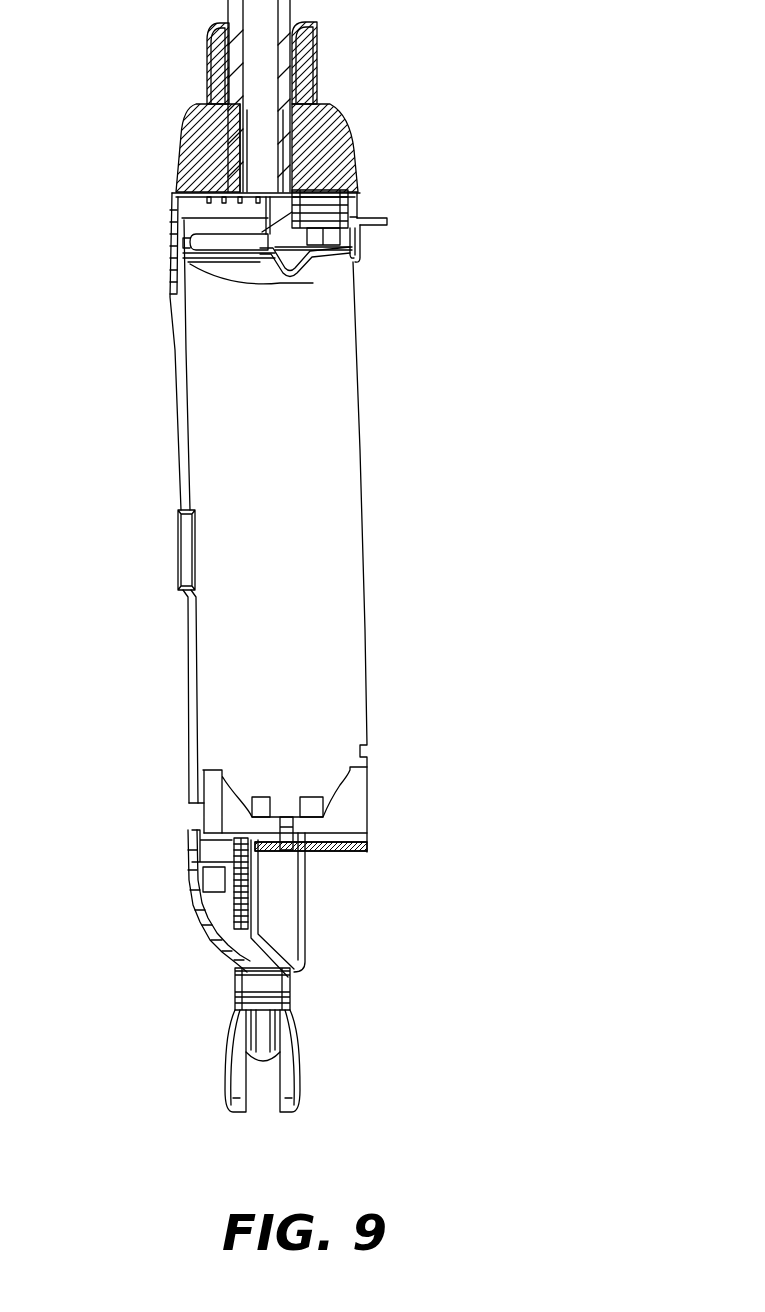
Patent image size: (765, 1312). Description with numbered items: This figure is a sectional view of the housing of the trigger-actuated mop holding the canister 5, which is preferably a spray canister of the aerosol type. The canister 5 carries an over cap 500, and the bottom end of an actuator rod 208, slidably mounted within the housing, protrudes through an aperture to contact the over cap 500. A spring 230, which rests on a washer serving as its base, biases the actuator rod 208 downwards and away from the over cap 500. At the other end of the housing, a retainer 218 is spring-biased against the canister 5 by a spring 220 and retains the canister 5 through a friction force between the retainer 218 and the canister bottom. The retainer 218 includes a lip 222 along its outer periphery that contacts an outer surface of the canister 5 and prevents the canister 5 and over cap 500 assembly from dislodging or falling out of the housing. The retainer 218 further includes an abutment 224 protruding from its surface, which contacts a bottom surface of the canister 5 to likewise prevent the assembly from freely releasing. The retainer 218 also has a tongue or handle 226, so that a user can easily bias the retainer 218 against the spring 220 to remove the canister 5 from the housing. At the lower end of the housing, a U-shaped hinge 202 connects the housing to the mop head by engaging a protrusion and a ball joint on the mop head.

The canister 5 is at (352, 594).
The spring 220 is at (348, 201).
The tongue or handle 226 is at (386, 221).
The retainer 218 is at (363, 235).
The lip 222 is at (358, 256).
The abutment 224 is at (313, 283).
The over cap 500 is at (370, 803).
The spring 230 is at (250, 873).
The actuator rod 208 is at (235, 915).
The U-shaped hinge 202 is at (303, 1039).